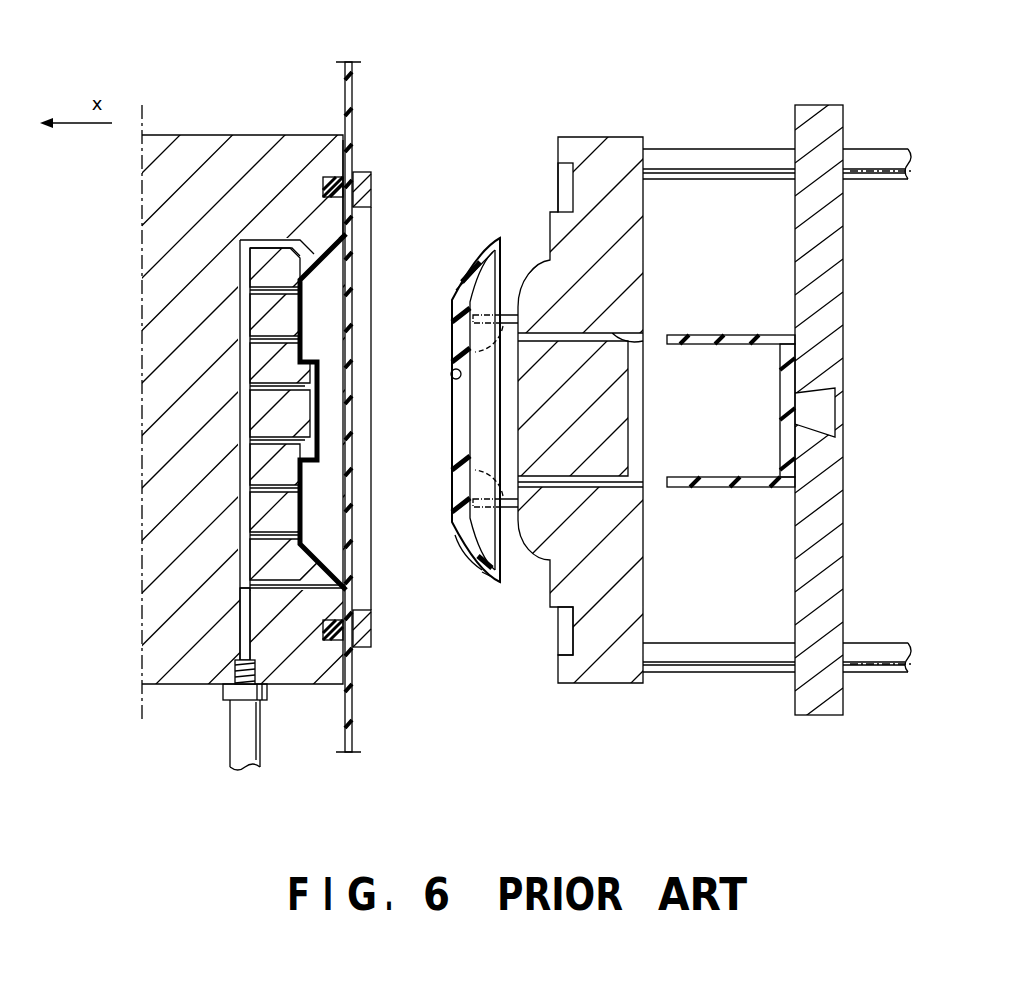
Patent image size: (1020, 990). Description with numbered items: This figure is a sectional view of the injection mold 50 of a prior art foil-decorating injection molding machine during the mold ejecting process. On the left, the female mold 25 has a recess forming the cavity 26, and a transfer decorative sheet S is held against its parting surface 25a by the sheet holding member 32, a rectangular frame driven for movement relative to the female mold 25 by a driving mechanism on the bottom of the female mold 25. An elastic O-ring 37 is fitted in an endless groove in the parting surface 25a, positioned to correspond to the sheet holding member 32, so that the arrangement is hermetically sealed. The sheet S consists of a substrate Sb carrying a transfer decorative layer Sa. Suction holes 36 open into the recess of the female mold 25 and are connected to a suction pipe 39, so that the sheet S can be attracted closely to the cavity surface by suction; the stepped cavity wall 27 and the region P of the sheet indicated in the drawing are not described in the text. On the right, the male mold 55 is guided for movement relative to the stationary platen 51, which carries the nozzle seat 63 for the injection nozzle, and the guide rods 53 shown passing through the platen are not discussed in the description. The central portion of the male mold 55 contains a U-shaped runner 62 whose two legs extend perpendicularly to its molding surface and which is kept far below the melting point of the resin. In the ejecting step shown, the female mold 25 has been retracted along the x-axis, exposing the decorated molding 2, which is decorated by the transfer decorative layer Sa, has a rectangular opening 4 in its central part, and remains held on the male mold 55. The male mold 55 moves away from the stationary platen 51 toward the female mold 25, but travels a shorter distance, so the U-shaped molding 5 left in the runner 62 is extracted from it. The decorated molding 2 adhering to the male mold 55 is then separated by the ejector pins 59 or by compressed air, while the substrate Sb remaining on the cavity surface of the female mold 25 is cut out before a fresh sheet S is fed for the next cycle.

The female mold 25 is at (200, 128).
The parting surface 25a is at (350, 158).
The transfer decorative sheet S is at (343, 83).
The sheet holding member 32 is at (373, 193).
The elastic O-ring 37 is at (330, 642).
The cavity 26 is at (318, 268).
The holder body 27 is at (300, 413).
The suction holes 36 is at (252, 486).
The substrate Sb is at (305, 302).
The suction pipe 39 is at (237, 731).
The decorated molding 2 is at (455, 405).
The rectangular opening 4 is at (455, 378).
The ejector pins 59 is at (455, 350).
The transfer decorative layer Sa is at (462, 548).
The preform edge P is at (490, 574).
The injection mold 50 is at (677, 86).
The male mold 55 is at (595, 148).
The U-shaped runner 62 is at (648, 337).
The guide rods 53 is at (728, 150).
The stationary platen 51 is at (830, 272).
The nozzle seat 63 is at (800, 428).
The U-shaped molding 5 is at (725, 334).